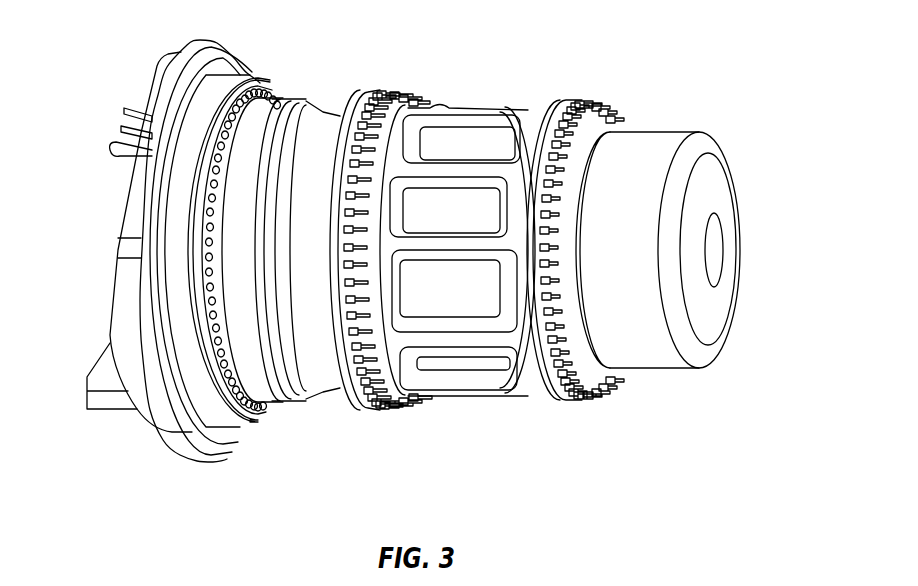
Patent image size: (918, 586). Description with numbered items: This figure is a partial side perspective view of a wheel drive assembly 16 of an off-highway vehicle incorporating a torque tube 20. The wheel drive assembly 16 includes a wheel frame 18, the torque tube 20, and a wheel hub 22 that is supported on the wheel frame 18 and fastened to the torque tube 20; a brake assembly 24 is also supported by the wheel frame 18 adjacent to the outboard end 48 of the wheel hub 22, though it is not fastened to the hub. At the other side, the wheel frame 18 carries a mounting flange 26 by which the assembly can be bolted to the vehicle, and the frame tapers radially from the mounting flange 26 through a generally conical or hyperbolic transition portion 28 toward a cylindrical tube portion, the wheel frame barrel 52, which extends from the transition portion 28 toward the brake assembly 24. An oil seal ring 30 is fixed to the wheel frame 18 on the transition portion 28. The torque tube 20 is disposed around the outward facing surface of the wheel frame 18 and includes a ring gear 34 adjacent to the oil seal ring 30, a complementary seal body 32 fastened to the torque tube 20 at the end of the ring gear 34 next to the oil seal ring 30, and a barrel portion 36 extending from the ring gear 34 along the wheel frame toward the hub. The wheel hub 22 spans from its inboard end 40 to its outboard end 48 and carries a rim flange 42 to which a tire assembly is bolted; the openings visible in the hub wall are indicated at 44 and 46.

The wheel drive assembly 16 is at (643, 81).
The wheel frame 18 is at (184, 51).
The torque tube 20 is at (283, 98).
The wheel hub 22 is at (468, 107).
The brake assembly 24 is at (715, 238).
The mounting flange 26 is at (188, 447).
The transition portion 28 is at (221, 77).
The oil seal ring 30 is at (213, 420).
The seal body 32 is at (240, 418).
The ring gear 34 is at (272, 397).
The barrel portion 36 is at (323, 360).
The inboard end 40 is at (412, 402).
The rim flange 42 is at (360, 387).
The lower window 44 is at (452, 358).
The window 46 is at (482, 325).
The outboard end 48 is at (128, 204).
The wheel frame barrel 52 is at (98, 377).